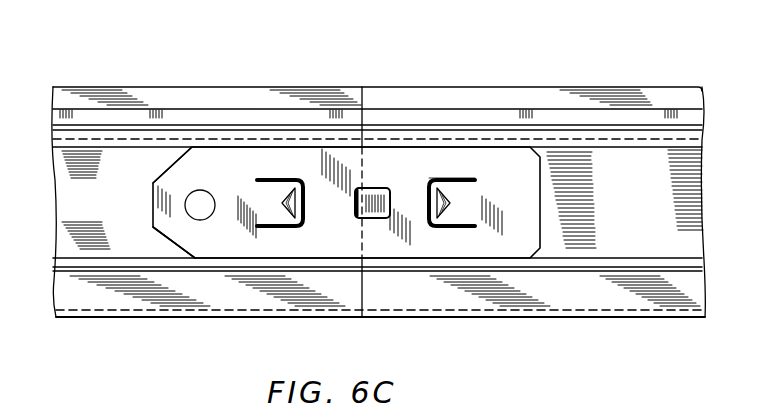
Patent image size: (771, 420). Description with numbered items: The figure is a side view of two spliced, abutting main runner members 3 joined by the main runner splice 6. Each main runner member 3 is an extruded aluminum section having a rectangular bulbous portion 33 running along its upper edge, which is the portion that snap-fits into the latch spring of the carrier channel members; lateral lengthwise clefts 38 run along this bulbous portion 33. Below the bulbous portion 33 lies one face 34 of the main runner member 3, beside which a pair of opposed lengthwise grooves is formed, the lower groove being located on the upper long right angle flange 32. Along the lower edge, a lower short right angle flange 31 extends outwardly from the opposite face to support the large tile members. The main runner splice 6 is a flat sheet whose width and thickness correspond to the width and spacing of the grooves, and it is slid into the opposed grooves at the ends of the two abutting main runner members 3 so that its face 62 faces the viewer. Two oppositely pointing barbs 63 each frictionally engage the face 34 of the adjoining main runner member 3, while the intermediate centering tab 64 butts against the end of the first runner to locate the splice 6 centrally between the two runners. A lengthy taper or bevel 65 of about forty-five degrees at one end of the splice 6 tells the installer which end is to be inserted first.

The main runner member 3 is at (225, 322).
The main runner splice 6 is at (458, 155).
The lower short right angle flange 31 is at (182, 312).
The upper long right angle flange 32 is at (100, 268).
The rectangular bulbous portion 33 is at (118, 95).
The face 34 is at (107, 216).
The lateral lengthwise clefts 38 is at (220, 117).
The face 62 is at (348, 248).
The barb 63 is at (288, 203).
The intermediate centering tab 64 is at (370, 200).
The taper or bevel 65 is at (172, 165).